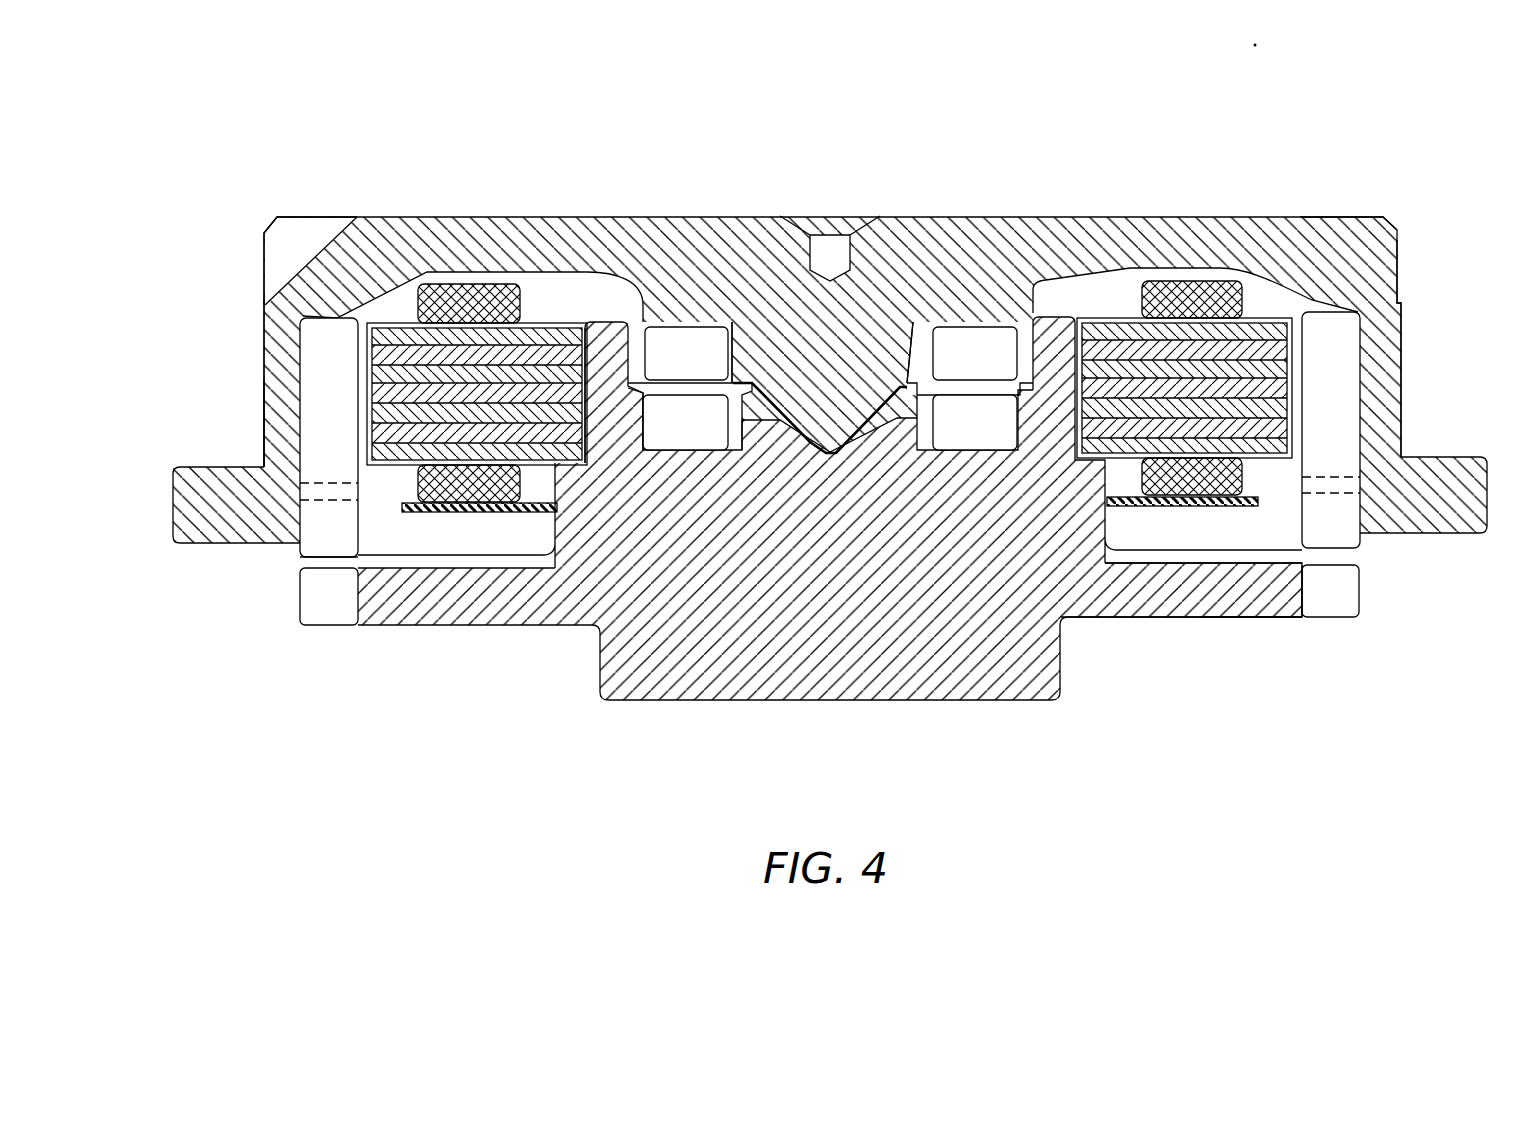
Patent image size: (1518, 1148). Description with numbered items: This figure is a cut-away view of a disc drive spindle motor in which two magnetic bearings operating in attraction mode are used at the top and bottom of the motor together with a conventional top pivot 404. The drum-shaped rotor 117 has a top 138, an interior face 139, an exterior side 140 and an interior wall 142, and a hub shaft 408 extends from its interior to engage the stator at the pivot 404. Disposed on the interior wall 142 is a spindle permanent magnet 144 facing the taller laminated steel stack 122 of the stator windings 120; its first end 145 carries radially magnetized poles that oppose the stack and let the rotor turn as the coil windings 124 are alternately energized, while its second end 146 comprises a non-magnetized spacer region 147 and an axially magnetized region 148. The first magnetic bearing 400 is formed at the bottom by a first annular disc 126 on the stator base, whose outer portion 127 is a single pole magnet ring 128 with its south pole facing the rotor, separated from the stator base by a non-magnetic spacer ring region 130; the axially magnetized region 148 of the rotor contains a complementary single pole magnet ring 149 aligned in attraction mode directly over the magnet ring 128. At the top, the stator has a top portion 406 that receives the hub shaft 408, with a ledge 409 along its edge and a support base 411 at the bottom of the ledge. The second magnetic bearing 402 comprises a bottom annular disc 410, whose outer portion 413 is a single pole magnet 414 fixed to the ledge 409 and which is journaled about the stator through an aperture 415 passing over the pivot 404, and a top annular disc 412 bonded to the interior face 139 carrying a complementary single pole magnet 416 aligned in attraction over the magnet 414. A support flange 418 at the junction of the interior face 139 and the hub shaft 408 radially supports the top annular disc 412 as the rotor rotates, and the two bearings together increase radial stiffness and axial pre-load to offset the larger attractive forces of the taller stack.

The rotor 117 is at (830, 355).
The first end 145 is at (263, 261).
The exterior side 140 is at (219, 363).
The spindle permanent magnet 144 is at (251, 428).
The interior wall 142 is at (197, 401).
The non-magnetized spacer region 147 is at (251, 440).
The complementary single pole magnet ring 149 is at (255, 553).
The axially magnetized region 148 is at (277, 592).
The second end 146 is at (279, 618).
The ledge 409 is at (541, 501).
The support base 411 is at (575, 552).
The single pole magnet 414 is at (712, 568).
The support flange 418 is at (830, 572).
The pivot 404 is at (830, 538).
The complementary single pole magnet 416 is at (625, 279).
The aperture 415 is at (782, 275).
The hub shaft 408 is at (859, 278).
The top portion 406 is at (949, 279).
The top annular disc 412 is at (1008, 274).
The second magnetic bearing 402 is at (1051, 309).
The outer portion 413 is at (1157, 514).
The bottom annular disc 410 is at (1171, 537).
The non-magnetic spacer ring region 130 is at (1203, 657).
The first annular disc 126 is at (1295, 676).
The single pole magnet ring 128 is at (1384, 635).
The outer portion 127 is at (1389, 608).
The first magnetic bearing 400 is at (1391, 459).
The laminated steel stack 122 is at (1284, 384).
The stator windings 120 is at (1398, 347).
The coil windings 124 is at (1285, 339).
The interior face 139 is at (830, 236).
The top 138 is at (1364, 183).